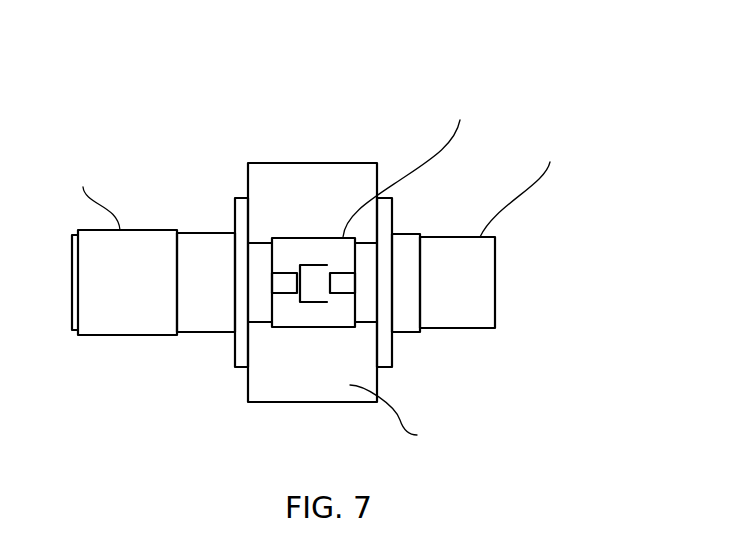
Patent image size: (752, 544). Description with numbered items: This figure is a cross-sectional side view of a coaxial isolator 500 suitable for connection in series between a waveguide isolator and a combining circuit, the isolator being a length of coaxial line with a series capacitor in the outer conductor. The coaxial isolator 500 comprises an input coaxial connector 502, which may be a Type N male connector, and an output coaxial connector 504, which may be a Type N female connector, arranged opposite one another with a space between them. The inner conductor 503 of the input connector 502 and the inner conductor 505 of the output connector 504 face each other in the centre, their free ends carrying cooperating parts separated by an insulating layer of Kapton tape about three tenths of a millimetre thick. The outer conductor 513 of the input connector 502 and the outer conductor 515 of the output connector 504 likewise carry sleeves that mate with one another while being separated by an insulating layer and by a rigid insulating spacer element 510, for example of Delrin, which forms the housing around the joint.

The coaxial isolator 500 is at (188, 130).
The input coaxial connector 502 is at (95, 335).
The inner conductor of the input connector 503 is at (283, 283).
The output coaxial connector 504 is at (457, 320).
The inner conductor of the output connector 505 is at (343, 283).
The rigid insulating spacer element 510 is at (277, 402).
The outer conductor of the input connector 513 is at (235, 208).
The outer conductor of the output connector 515 is at (392, 208).